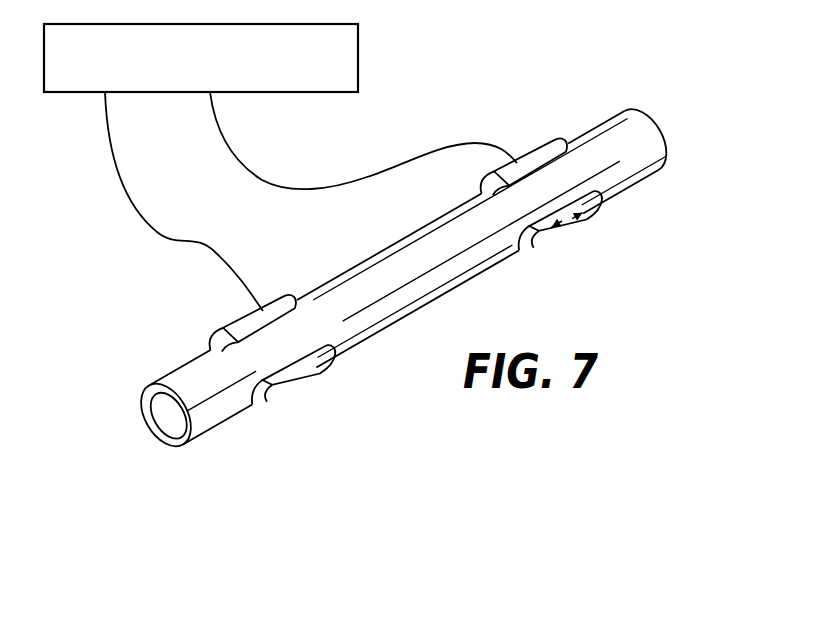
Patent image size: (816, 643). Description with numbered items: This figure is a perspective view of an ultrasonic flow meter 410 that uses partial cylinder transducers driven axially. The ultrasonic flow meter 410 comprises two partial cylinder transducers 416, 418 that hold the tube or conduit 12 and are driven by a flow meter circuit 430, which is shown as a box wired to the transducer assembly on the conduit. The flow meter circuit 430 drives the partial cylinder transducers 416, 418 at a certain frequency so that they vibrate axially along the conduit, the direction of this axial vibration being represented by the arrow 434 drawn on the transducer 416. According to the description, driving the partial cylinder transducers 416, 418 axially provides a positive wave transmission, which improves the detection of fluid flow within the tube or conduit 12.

The flow meter circuit 430 is at (358, 48).
The ultrasonic flow meter 410 is at (404, 238).
The tube or conduit 12 is at (594, 130).
The partial cylinder transducer 418 is at (302, 375).
The partial cylinder transducer 416 is at (537, 249).
The arrow 434 is at (563, 227).